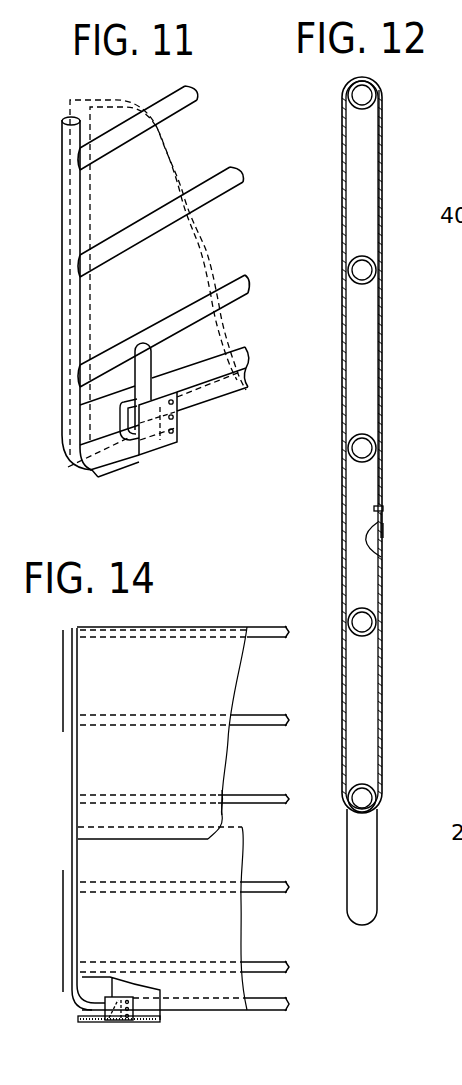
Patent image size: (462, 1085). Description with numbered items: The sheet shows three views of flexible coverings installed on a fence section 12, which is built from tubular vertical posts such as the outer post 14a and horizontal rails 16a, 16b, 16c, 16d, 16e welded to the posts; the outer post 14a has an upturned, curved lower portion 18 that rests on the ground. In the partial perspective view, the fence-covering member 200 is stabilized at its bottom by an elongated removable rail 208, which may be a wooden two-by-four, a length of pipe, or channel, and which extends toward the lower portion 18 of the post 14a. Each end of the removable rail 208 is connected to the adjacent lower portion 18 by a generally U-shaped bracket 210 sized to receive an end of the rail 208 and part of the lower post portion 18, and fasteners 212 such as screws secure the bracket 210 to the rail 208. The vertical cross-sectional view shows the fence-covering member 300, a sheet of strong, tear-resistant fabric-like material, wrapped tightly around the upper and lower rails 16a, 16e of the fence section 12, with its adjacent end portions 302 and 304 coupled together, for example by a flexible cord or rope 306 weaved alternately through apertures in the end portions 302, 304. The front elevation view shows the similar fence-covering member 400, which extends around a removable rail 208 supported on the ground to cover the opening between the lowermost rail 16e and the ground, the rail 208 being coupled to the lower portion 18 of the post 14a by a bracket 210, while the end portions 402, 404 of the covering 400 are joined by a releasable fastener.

In FIG. 11, the fence section 12 is at (54, 321).
In FIG. 12, the fence section 12 is at (370, 374).
In FIG. 14, the fence section 12 is at (52, 910).
In FIG. 11, the vertical post 14a is at (63, 218).
In FIG. 14, the vertical post 14a is at (63, 678).
In FIG. 12, the rail 16a is at (367, 107).
In FIG. 14, the rail 16a is at (263, 638).
In FIG. 12, the rail 16b is at (367, 282).
In FIG. 14, the rail 16b is at (263, 726).
In FIG. 11, the rail 16c is at (170, 113).
In FIG. 12, the rail 16c is at (368, 437).
In FIG. 14, the rail 16c is at (267, 804).
In FIG. 11, the rail 16d is at (207, 203).
In FIG. 12, the rail 16d is at (367, 634).
In FIG. 14, the rail 16d is at (265, 893).
In FIG. 11, the rail 16e is at (230, 300).
In FIG. 12, the rail 16e is at (368, 786).
In FIG. 14, the rail 16e is at (268, 973).
In FIG. 11, the curved lower portion 18 is at (147, 367).
In FIG. 12, the curved lower portion 18 is at (373, 882).
In FIG. 14, the curved lower portion 18 is at (67, 1000).
In FIG. 11, the fence-covering member 200 is at (83, 95).
In FIG. 11, the removable rail 208 is at (195, 373).
In FIG. 14, the removable rail 208 is at (143, 1013).
In FIG. 11, the U-shaped bracket 210 is at (147, 448).
In FIG. 14, the U-shaped bracket 210 is at (117, 1019).
In FIG. 11, the fasteners 212 is at (174, 402).
In FIG. 12, the fence-covering member 300 is at (395, 194).
In FIG. 12, the end portion 302 is at (384, 523).
In FIG. 12, the end portion 304 is at (381, 557).
In FIG. 12, the flexible cord or rope 306 is at (383, 508).
In FIG. 14, the fence-covering member 400 is at (210, 612).
In FIG. 14, the end portion 402 is at (200, 840).
In FIG. 14, the end portion 404 is at (219, 819).